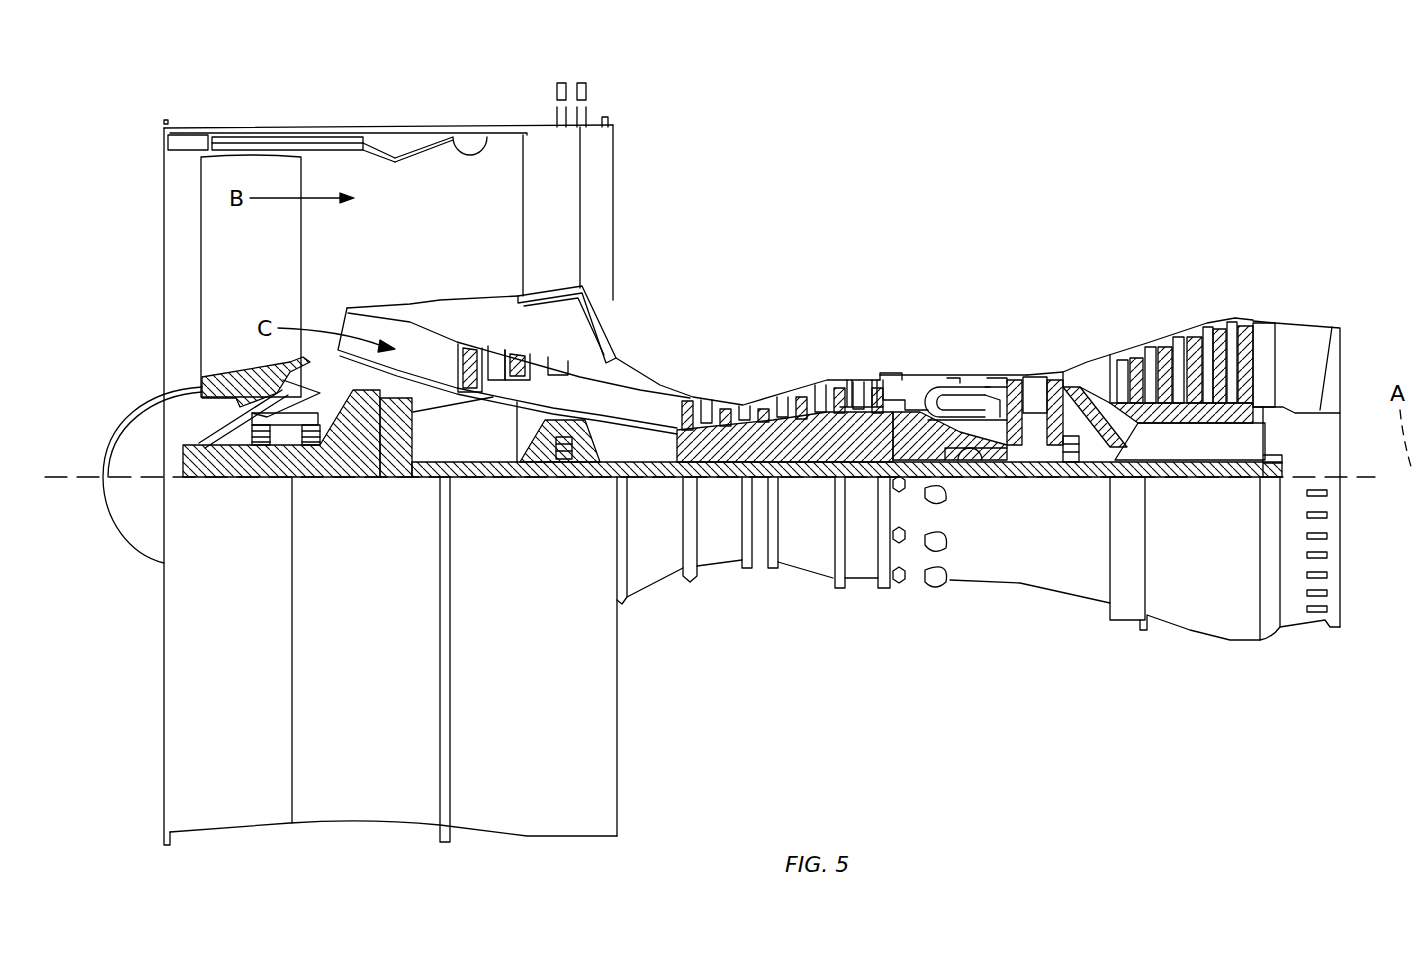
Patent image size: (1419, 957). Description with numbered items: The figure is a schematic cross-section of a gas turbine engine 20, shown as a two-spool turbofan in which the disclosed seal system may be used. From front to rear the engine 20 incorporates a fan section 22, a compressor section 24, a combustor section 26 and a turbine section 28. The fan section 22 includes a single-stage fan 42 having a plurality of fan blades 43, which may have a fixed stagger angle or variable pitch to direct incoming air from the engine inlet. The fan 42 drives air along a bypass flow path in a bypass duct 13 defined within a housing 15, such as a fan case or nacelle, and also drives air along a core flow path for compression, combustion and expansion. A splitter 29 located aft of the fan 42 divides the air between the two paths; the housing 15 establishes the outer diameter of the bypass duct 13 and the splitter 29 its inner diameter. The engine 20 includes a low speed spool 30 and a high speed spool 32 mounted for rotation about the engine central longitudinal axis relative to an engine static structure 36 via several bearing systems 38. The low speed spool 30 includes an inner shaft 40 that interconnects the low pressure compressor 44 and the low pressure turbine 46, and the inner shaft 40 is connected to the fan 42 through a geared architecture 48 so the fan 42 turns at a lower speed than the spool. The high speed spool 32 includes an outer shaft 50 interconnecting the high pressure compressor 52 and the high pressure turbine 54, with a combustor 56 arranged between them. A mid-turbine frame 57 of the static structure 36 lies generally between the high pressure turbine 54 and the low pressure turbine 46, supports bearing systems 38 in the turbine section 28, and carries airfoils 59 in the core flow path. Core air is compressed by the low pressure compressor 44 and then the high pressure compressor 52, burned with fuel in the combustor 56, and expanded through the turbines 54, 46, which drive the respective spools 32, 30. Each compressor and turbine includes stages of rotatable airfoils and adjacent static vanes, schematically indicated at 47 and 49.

The bypass duct 13 is at (487, 137).
The housing 15 is at (395, 133).
The gas turbine engine 20 is at (1008, 224).
The fan section 22 is at (307, 118).
The compressor section 24 is at (664, 372).
The combustor section 26 is at (940, 366).
The turbine section 28 is at (1138, 313).
The splitter 29 is at (385, 300).
The low speed spool 30 is at (818, 478).
The high speed spool 32 is at (867, 433).
The engine static structure 36 is at (862, 582).
The bearing systems 38 is at (567, 472).
The inner shaft 40 is at (632, 472).
The fan 42 is at (262, 268).
The fan blades 43 is at (303, 278).
The low pressure compressor 44 is at (518, 357).
The low pressure turbine 46 is at (1190, 340).
The rotatable airfoils 47 is at (468, 350).
The geared architecture 48 is at (395, 455).
The static vanes 49 is at (493, 353).
The outer shaft 50 is at (985, 455).
The high pressure compressor 52 is at (788, 395).
The high pressure turbine 54 is at (1037, 370).
The combustor 56 is at (957, 403).
The mid-turbine frame 57 is at (1087, 365).
The airfoils 59 is at (1127, 423).